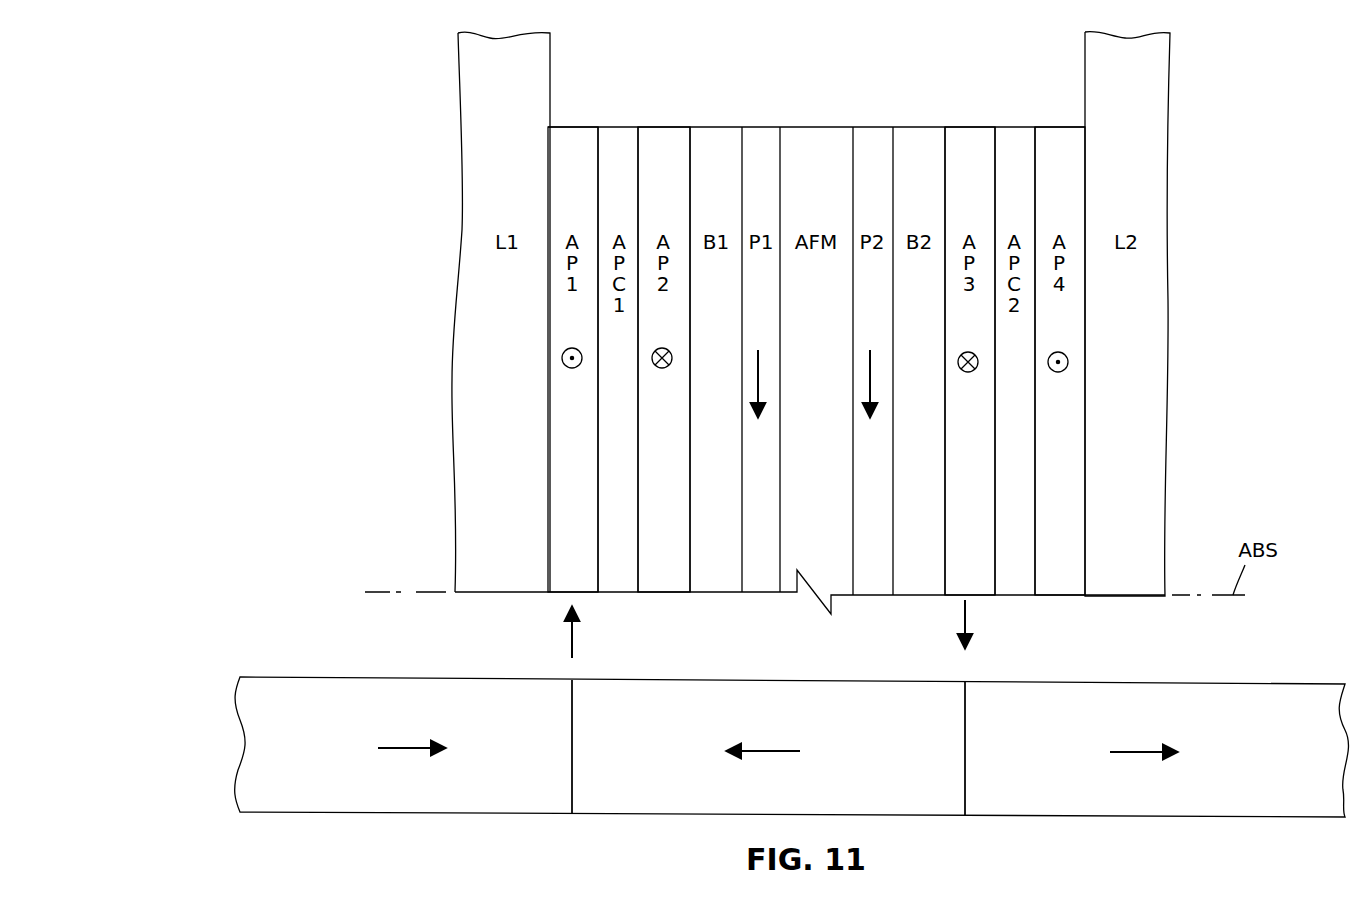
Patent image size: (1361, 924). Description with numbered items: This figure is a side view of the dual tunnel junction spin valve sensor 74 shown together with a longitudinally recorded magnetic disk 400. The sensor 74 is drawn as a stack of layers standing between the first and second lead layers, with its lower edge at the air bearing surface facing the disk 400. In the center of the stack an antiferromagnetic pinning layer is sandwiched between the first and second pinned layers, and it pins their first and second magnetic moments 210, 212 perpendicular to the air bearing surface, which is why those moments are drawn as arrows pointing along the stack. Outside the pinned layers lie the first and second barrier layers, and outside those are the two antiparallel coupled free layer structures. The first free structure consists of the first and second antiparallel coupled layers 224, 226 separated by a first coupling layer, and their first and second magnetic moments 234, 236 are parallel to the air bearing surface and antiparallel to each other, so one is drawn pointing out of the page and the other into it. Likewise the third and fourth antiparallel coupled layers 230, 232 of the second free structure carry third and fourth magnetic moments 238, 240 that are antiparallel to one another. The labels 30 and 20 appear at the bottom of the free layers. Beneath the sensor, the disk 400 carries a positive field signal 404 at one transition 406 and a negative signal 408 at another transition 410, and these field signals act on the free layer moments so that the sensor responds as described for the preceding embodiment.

The dual tunnel junction sensor 74 is at (843, 102).
The first antiparallel coupled layer 224 is at (574, 135).
The second antiparallel coupled layer 226 is at (661, 135).
The third antiparallel coupled layer 230 is at (968, 135).
The fourth antiparallel coupled layer 232 is at (1060, 135).
The first magnetic moment 234 is at (572, 368).
The second magnetic moment 236 is at (662, 368).
The third magnetic moment 238 is at (968, 372).
The fourth magnetic moment 240 is at (1058, 372).
The first magnetic moment of first pinned layer 210 is at (758, 362).
The second magnetic moment of second pinned layer 212 is at (870, 382).
The layer thickness 30 is at (769, 560).
The layer thickness 20 is at (833, 560).
The longitudinally recorded magnetic disk 400 is at (1100, 661).
The positive field signal 404 is at (572, 640).
The transition 406 is at (572, 682).
The negative signal 408 is at (965, 616).
The transition 410 is at (965, 684).